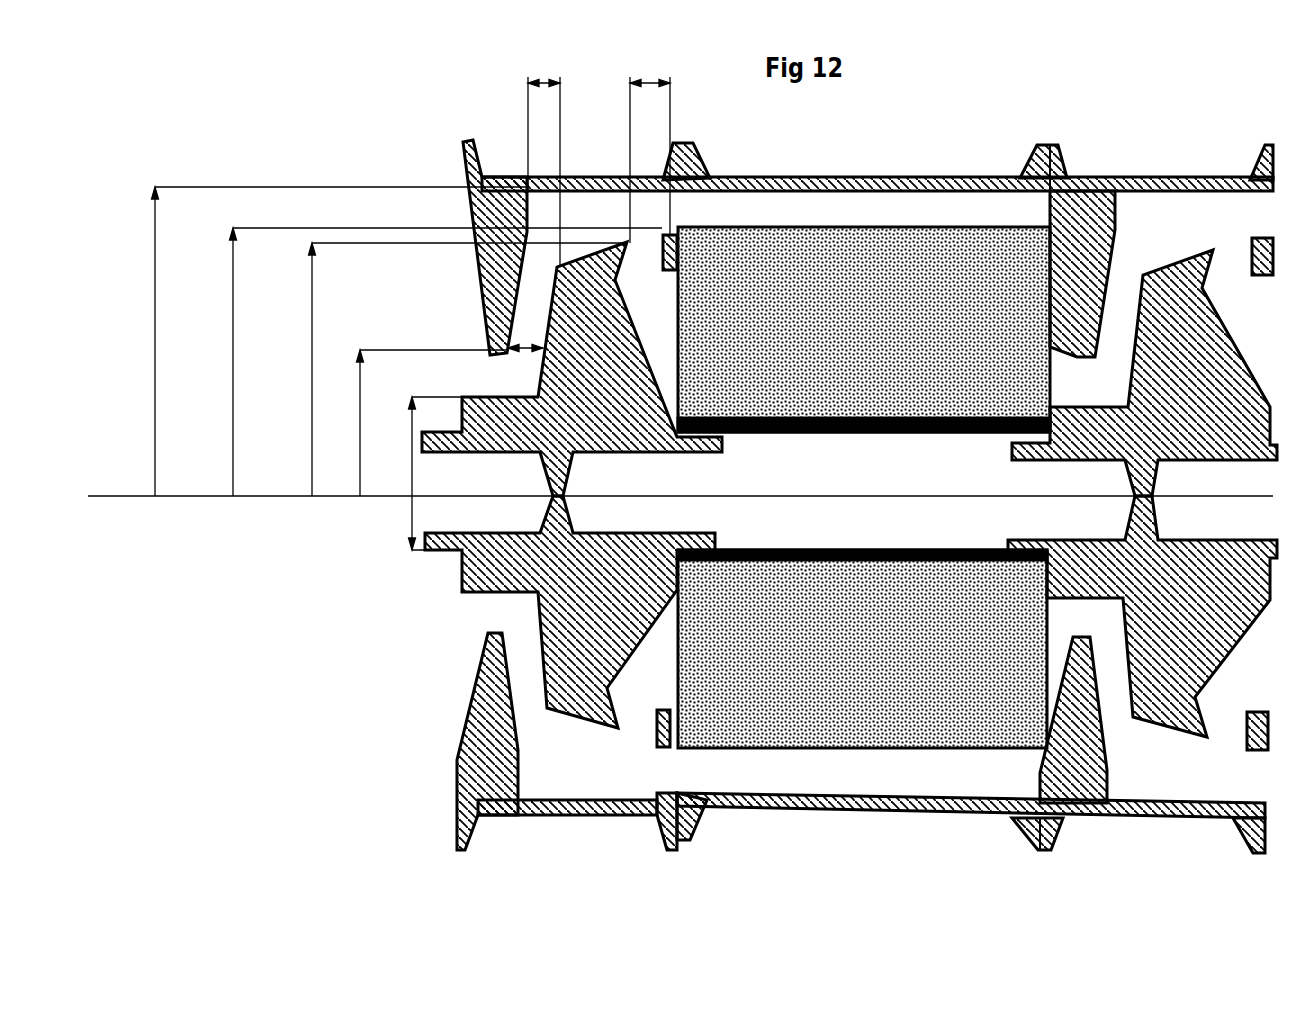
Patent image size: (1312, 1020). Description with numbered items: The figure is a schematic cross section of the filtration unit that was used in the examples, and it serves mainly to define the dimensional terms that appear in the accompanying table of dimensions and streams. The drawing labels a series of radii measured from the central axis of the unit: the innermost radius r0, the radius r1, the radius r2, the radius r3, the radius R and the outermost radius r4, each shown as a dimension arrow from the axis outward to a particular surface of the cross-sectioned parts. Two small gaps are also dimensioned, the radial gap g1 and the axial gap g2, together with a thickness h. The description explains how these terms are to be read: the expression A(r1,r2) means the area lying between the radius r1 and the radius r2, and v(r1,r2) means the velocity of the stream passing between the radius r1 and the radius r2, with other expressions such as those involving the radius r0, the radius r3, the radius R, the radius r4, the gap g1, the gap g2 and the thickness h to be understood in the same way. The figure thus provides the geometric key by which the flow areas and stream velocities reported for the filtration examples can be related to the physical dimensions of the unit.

The shaft bore radius r0 is at (405, 523).
The radius r1 is at (428, 446).
The radius r2 is at (422, 423).
The pole piece tip radius r3 is at (457, 369).
The outer plate inner radius R is at (440, 362).
The outer plate radius r4 is at (329, 341).
The radial gap between blade and pole piece g1 is at (525, 337).
The axial gap between blade and pole piece g2 is at (544, 157).
The pole piece thickness h is at (650, 146).